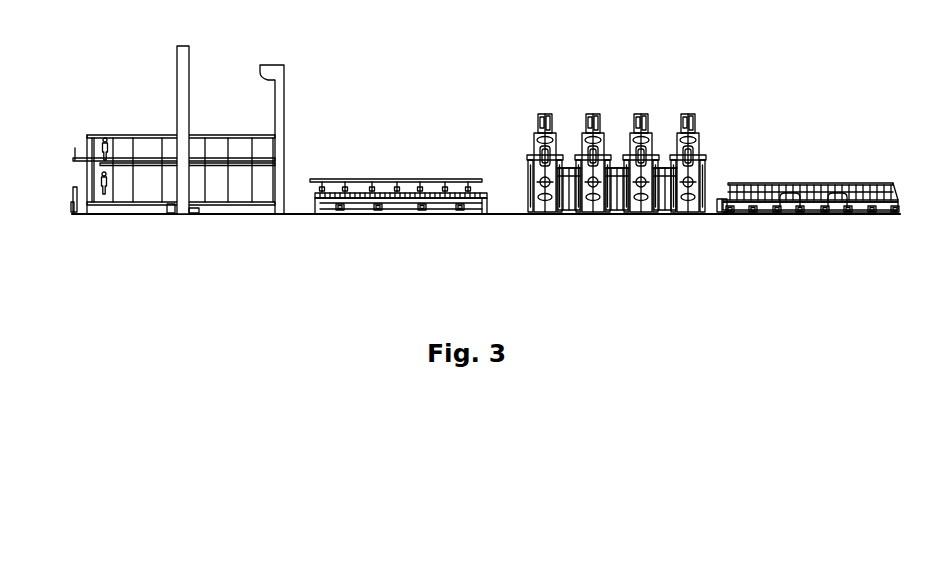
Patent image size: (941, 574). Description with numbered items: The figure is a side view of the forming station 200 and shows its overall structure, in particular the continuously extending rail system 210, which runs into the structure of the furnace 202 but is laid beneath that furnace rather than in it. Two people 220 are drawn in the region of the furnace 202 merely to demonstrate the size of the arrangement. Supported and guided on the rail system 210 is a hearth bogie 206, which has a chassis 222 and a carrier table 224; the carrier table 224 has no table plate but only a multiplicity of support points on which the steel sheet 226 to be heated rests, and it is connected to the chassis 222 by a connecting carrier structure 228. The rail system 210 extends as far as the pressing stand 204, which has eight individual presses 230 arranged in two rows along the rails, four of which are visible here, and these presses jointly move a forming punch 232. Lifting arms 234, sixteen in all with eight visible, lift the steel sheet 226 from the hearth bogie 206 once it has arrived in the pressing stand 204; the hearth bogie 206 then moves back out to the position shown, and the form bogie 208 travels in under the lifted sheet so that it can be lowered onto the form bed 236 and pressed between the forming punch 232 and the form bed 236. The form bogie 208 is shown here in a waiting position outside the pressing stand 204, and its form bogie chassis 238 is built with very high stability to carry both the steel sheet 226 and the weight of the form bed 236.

The forming station 200 is at (508, 215).
The furnace 202 is at (221, 132).
The pressing stand 204 is at (640, 160).
The hearth bogie 206 is at (398, 177).
The form bogie 208 is at (811, 194).
The rail system 210 is at (170, 218).
The people 220 is at (112, 183).
The chassis 222 is at (358, 212).
The carrier table 224 is at (445, 187).
The steel sheet 226 is at (323, 185).
The carrier structure 228 is at (413, 205).
The individual presses 230 is at (648, 145).
The forming punch 232 is at (620, 193).
The lifting arms 234 is at (671, 200).
The form bed 236 is at (813, 188).
The form bogie chassis 238 is at (747, 215).